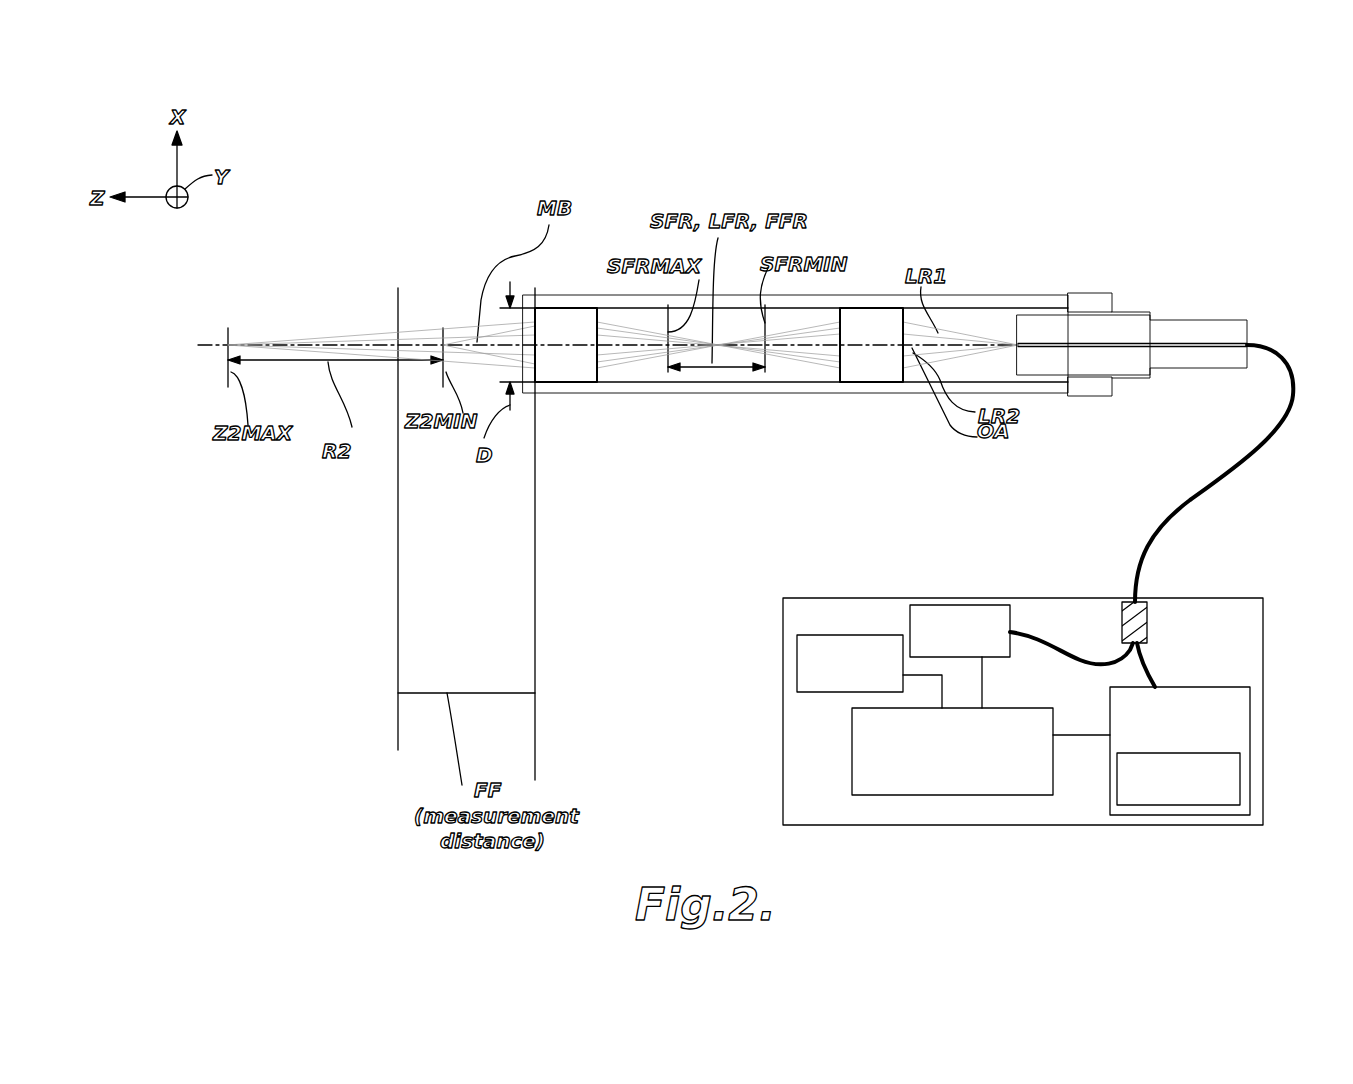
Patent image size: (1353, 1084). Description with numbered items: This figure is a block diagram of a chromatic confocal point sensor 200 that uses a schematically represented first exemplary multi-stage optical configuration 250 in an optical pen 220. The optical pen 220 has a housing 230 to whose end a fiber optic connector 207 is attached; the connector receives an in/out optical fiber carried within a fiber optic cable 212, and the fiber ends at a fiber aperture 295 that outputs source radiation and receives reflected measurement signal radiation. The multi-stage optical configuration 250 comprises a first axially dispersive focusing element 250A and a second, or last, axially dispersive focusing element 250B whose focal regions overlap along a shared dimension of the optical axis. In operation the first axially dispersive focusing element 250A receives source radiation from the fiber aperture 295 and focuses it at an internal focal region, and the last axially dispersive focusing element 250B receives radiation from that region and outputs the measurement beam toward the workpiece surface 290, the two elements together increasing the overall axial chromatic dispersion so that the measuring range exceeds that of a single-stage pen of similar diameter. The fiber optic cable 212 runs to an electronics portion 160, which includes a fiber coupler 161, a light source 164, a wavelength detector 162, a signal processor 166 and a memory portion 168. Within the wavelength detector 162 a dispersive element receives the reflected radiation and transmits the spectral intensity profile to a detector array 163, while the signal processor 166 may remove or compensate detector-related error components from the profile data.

The workpiece surface 290 is at (398, 582).
The housing 230 is at (877, 295).
The multi-stage optical configuration 250 is at (721, 401).
The first axially dispersive focusing element 250A is at (871, 379).
The second (last) axially dispersive focusing element 250B is at (596, 400).
The fiber aperture 295 is at (1014, 343).
The fiber optic connector 207 is at (1160, 290).
The fiber optic cable 212 is at (1265, 345).
The optical pen 220 is at (910, 416).
The chromatic confocal point sensor 200 is at (1030, 450).
The electronics portion 160 is at (1080, 597).
The memory portion 168 is at (857, 634).
The light source 164 is at (1010, 616).
The fiber coupler 161 is at (1147, 612).
The wavelength detector 162 is at (1230, 686).
The signal processor 166 is at (1052, 708).
The detector array 163 is at (1135, 805).